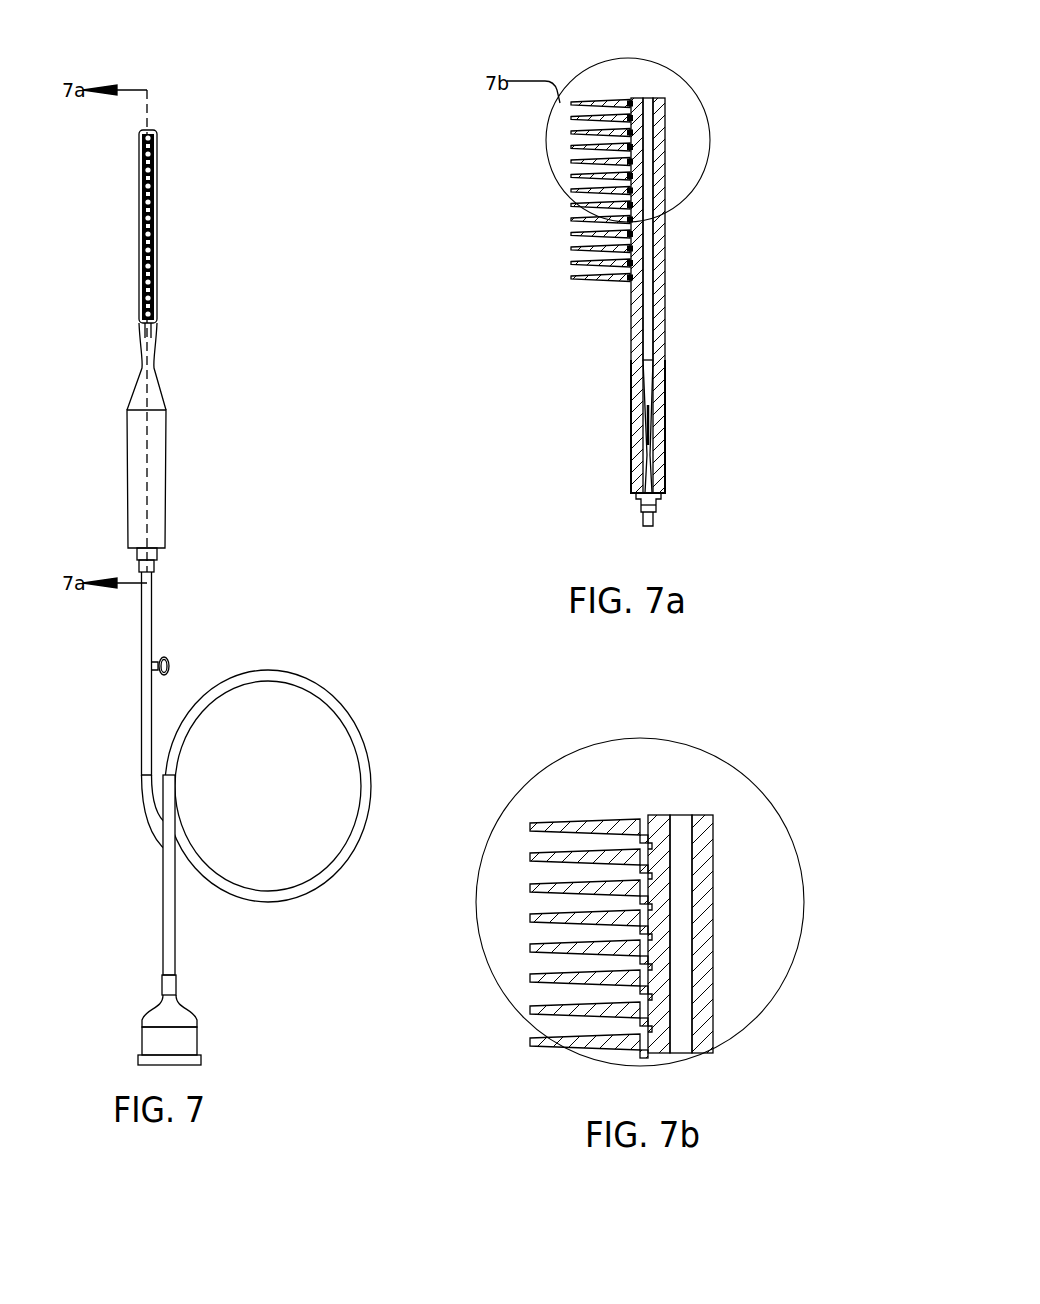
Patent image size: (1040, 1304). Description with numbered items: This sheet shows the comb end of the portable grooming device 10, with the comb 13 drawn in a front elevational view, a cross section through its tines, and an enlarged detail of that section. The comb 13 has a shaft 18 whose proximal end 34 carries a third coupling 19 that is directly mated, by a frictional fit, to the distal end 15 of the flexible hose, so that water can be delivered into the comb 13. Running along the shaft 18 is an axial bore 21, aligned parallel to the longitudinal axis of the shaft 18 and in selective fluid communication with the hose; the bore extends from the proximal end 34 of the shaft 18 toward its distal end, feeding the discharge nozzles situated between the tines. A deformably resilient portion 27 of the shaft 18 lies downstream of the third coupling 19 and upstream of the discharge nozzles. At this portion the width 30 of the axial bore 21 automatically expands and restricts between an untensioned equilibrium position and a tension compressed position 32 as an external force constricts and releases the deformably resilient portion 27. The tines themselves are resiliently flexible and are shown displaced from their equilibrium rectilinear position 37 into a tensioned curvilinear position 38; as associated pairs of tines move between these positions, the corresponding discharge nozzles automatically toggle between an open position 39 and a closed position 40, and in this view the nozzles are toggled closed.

In FIG. 7, the portable grooming device 10 is at (187, 145).
In FIG. 7, the comb 13 is at (108, 212).
In FIG. 7A, the distal end 15 is at (653, 524).
In FIG. 7A, the shaft 18 is at (660, 302).
In FIG. 7A, the third coupling 19 is at (638, 501).
In FIG. 7A, the axial bore 21 is at (649, 316).
In FIG. 7B, the axial bore 21 is at (683, 830).
In FIG. 7A, the deformably resilient portion 27 is at (672, 493).
In FIG. 7A, the width of the axial bore 30 is at (640, 411).
In FIG. 7A, the tension compressed position 32 is at (640, 437).
In FIG. 7A, the proximal end of the shaft 34 is at (668, 505).
In FIG. 7B, the equilibrium rectilinear position 37 is at (530, 858).
In FIG. 7A, the tensioned curvilinear position 38 is at (560, 142).
In FIG. 7B, the tensioned curvilinear position 38 is at (518, 908).
In FIG. 7B, the open position 39 is at (642, 836).
In FIG. 7B, the closed position 40 is at (650, 898).